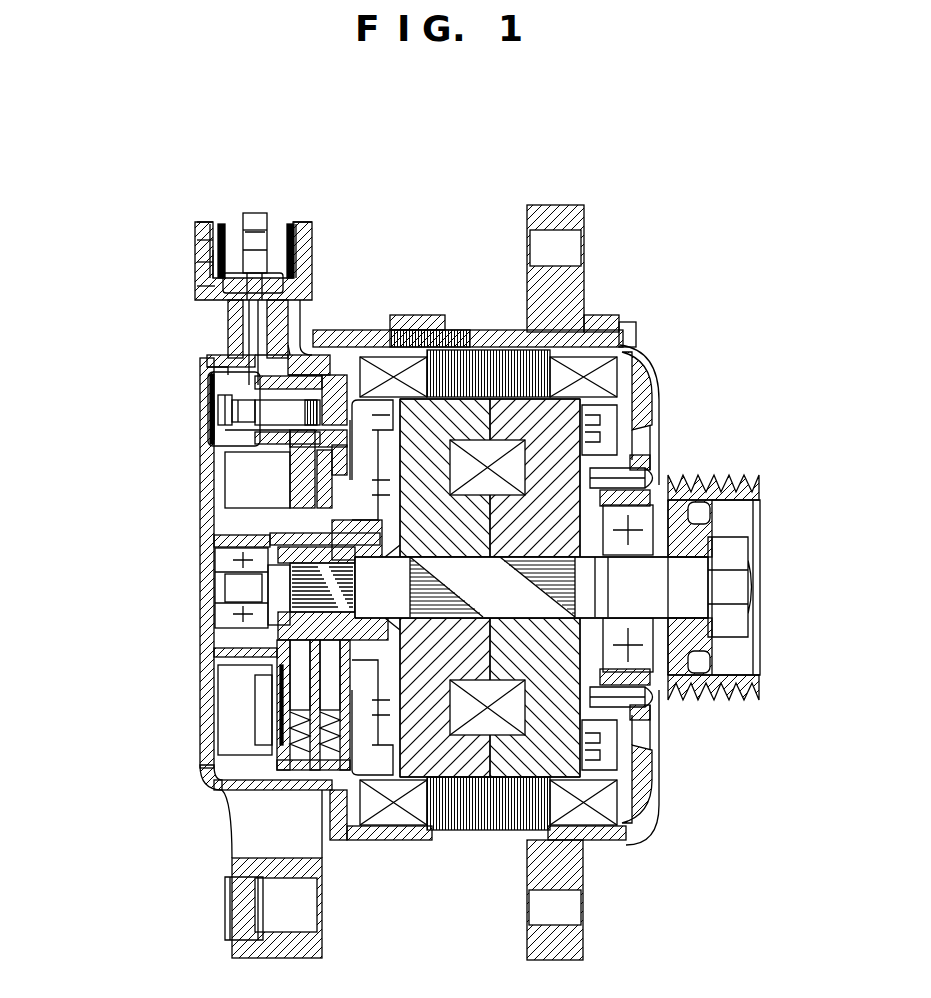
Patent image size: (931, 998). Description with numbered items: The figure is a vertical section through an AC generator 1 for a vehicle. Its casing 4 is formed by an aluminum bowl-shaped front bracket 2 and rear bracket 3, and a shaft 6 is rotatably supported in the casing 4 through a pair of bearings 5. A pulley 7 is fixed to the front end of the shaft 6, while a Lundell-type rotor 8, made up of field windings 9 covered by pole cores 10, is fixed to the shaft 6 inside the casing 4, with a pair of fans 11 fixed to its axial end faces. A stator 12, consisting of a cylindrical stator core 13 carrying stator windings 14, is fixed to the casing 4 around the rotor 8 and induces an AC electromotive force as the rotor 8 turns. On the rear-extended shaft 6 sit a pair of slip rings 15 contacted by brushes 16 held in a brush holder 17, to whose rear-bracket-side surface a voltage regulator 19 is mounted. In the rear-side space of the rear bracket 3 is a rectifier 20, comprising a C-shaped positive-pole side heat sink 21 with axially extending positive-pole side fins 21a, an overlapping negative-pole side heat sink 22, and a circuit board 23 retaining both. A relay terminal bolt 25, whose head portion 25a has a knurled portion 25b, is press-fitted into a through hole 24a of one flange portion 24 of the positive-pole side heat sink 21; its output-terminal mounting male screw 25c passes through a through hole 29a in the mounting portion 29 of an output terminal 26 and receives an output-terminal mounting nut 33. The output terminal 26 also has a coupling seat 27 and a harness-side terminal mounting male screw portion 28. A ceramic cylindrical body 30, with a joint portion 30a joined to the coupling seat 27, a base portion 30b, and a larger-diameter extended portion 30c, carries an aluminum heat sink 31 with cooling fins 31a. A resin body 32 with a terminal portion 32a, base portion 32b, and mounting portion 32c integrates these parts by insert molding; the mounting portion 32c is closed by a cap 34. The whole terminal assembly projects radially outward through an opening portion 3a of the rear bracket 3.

The AC generator for a vehicle 1 is at (625, 290).
The front bracket 2 is at (656, 400).
The rear bracket 3 is at (293, 357).
The opening portion 3a is at (230, 333).
The casing 4 is at (660, 352).
The bearings 5 is at (240, 560).
The shaft 6 is at (690, 596).
The pulley 7 is at (745, 482).
The rotor 8 is at (488, 530).
The field windings 9 is at (466, 350).
The pole cores 10 is at (506, 355).
The fans 11 is at (618, 740).
The stator 12 is at (490, 671).
The stator core 13 is at (490, 785).
The stator windings 14 is at (525, 805).
The slip rings 15 is at (290, 605).
The brushes 16 is at (300, 692).
The brush holder 17 is at (262, 732).
The voltage regulator 19 is at (250, 755).
The rectifier 20 is at (235, 547).
The positive-pole side heat sink 21 is at (305, 520).
The positive-pole side fins 21a is at (245, 482).
The negative-pole side heat sink 22 is at (245, 456).
The circuit board 23 is at (332, 476).
The flange portion 24 is at (377, 450).
The through hole 24a is at (412, 330).
The relay terminal bolt 25 is at (303, 342).
The head portion 25a is at (281, 412).
The knurled portion 25b is at (284, 392).
The output-terminal mounting male screw 25c is at (208, 432).
The output terminal 26 is at (252, 210).
The coupling seat 27 is at (345, 333).
The harness-side terminal mounting male screw portion 28 is at (263, 255).
The mounting portion 29 is at (235, 348).
The through hole 29a is at (207, 368).
The cylindrical body 30 is at (299, 255).
The joint portion 30a is at (200, 296).
The base portion 30b is at (200, 270).
The extended portion 30c is at (200, 250).
The heat sink 31 is at (307, 235).
The cooling fins 31a is at (212, 245).
The resin body 32 is at (206, 225).
The terminal portion 32a is at (221, 245).
The base portion 32b is at (318, 322).
The mounting portion 32c is at (296, 365).
The output-terminal mounting nut 33 is at (290, 440).
The cap 34 is at (210, 410).